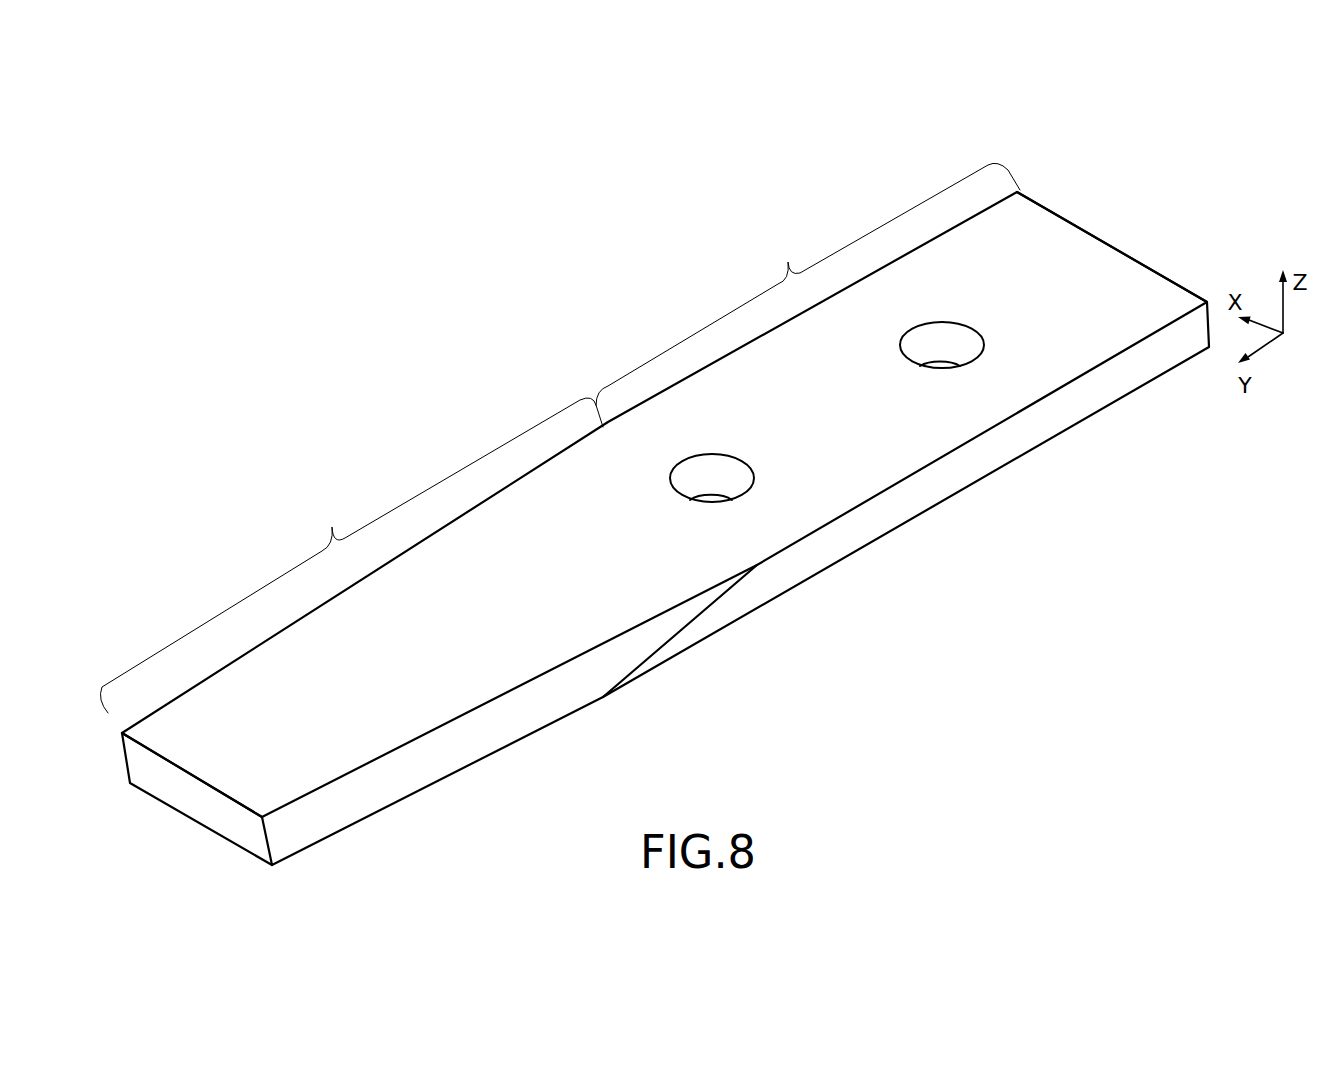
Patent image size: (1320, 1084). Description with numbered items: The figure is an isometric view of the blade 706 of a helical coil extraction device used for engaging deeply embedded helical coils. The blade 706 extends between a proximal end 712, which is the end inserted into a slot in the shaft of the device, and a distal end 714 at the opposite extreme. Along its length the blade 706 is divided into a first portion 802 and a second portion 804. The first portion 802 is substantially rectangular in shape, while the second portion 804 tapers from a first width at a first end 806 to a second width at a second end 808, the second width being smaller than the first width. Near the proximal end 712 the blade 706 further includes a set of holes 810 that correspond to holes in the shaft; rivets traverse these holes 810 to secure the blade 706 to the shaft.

The proximal end of blade 712 is at (1158, 238).
The distal end of blade 714 is at (199, 846).
The blade 706 is at (548, 397).
The first portion 802 is at (808, 284).
The second portion 804 is at (348, 555).
The first end 806 is at (1022, 149).
The second end 808 is at (112, 655).
The set of holes 810 is at (735, 473).